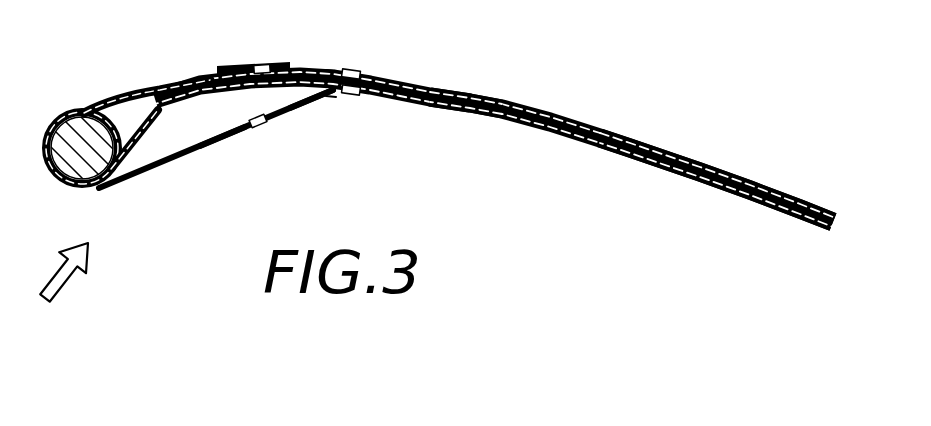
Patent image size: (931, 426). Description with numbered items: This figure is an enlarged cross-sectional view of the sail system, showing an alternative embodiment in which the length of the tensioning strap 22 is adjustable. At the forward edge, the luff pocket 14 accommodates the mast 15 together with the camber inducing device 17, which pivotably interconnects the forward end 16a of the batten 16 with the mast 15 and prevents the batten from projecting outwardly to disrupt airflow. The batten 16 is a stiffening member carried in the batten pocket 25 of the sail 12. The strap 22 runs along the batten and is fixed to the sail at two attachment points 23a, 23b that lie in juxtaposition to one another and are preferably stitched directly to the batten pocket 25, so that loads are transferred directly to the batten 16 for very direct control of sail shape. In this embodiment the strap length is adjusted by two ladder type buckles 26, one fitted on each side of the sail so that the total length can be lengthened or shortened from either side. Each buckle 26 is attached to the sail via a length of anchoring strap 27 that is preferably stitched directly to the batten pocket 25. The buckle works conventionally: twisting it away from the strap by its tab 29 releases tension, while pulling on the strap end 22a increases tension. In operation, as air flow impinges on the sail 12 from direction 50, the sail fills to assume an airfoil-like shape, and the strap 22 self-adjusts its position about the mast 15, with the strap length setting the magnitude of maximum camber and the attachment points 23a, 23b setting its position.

The sail 12 is at (506, 92).
The luff pocket 14 is at (80, 111).
The mast 15 is at (65, 164).
The batten 16 is at (470, 105).
The forward end of batten 16a is at (150, 96).
The camber inducing device 17 is at (110, 98).
The tensioning strap 22 is at (152, 166).
The strap end 22a is at (230, 139).
The attachment point 23a is at (357, 96).
The attachment point 23b is at (357, 69).
The batten pocket 25 is at (633, 157).
The ladder type buckle 26 is at (260, 126).
The anchoring strap 27 is at (331, 70).
The tab 29 is at (278, 116).
The direction 50 is at (58, 287).